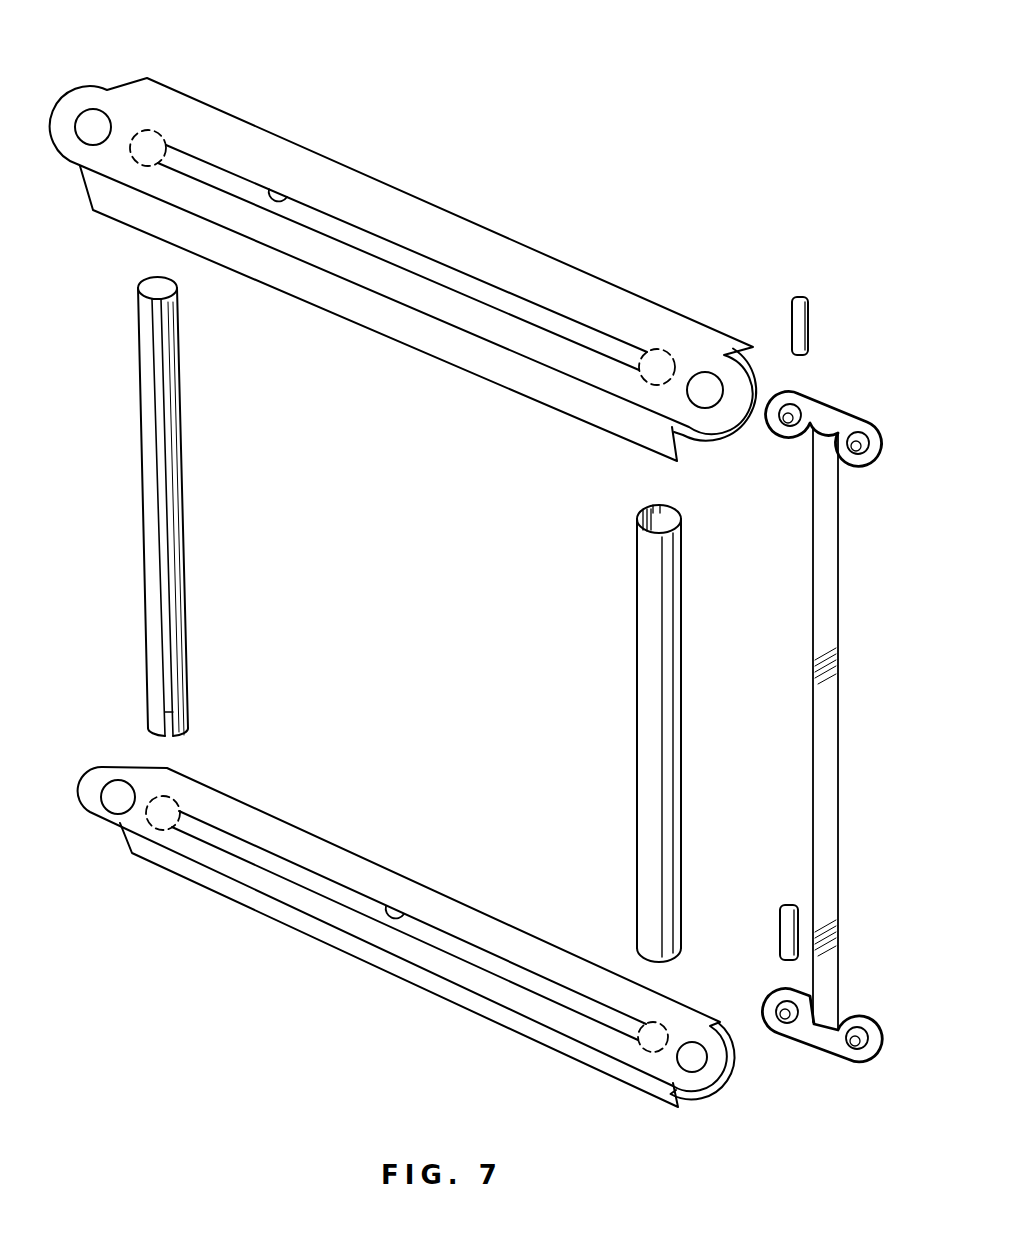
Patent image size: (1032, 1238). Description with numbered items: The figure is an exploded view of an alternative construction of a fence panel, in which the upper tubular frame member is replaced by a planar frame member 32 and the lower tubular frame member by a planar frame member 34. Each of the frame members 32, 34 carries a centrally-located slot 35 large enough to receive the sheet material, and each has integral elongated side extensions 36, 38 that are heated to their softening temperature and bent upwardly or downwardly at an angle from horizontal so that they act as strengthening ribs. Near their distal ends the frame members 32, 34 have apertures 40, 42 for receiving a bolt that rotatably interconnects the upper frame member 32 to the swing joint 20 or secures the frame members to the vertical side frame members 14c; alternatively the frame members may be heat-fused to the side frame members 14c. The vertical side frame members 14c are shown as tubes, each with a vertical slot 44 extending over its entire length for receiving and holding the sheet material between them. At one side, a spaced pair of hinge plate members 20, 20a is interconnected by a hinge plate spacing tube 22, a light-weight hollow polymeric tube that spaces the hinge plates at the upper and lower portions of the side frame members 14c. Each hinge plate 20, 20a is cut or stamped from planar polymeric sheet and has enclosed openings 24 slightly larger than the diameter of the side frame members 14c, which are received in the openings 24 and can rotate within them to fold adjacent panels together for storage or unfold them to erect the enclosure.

The upper planar frame member 32 is at (480, 190).
The lower planar frame member 34 is at (367, 829).
The side extension 36 is at (190, 102).
The side extension 38 is at (148, 222).
The aperture 40 is at (94, 120).
The aperture 42 is at (706, 385).
The slot 35 is at (279, 192).
The vertical side frame member 14c is at (182, 538).
The vertical slot 44 is at (162, 440).
The hinge plate member 20 is at (830, 414).
The hinge plate member 20a is at (850, 1018).
The hinge plate spacing tube 22 is at (840, 610).
The opening 24 is at (784, 424).